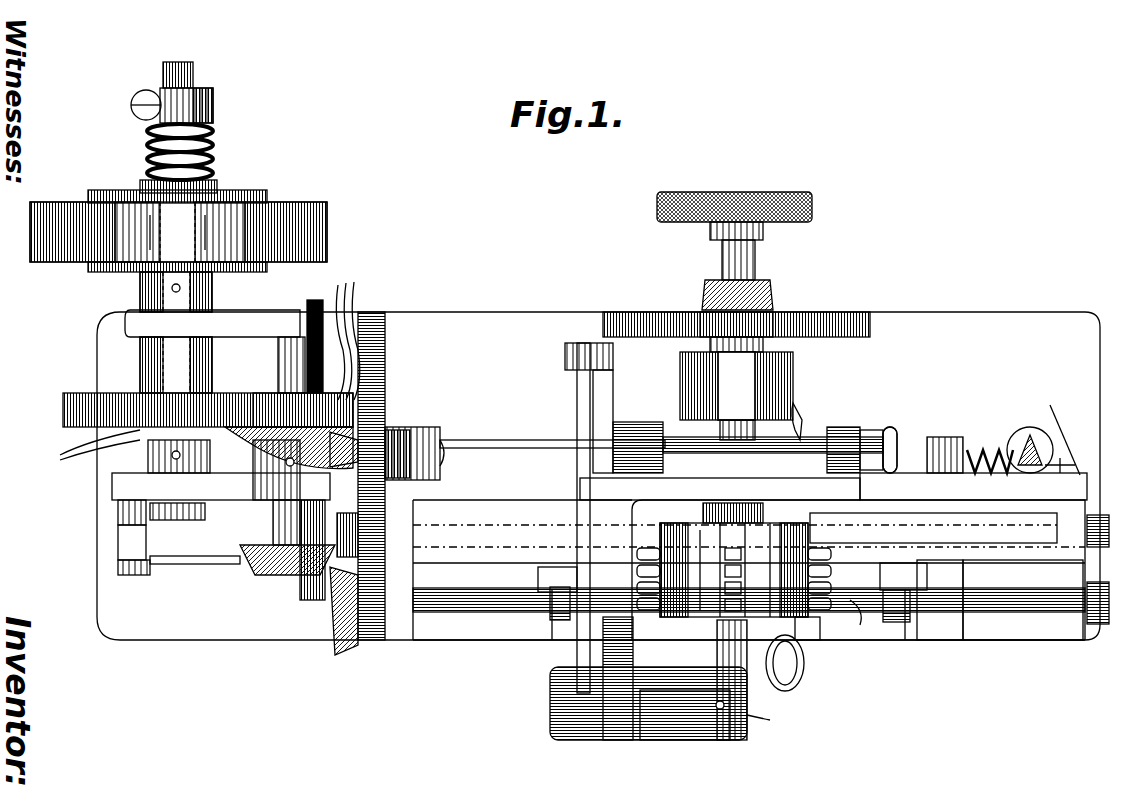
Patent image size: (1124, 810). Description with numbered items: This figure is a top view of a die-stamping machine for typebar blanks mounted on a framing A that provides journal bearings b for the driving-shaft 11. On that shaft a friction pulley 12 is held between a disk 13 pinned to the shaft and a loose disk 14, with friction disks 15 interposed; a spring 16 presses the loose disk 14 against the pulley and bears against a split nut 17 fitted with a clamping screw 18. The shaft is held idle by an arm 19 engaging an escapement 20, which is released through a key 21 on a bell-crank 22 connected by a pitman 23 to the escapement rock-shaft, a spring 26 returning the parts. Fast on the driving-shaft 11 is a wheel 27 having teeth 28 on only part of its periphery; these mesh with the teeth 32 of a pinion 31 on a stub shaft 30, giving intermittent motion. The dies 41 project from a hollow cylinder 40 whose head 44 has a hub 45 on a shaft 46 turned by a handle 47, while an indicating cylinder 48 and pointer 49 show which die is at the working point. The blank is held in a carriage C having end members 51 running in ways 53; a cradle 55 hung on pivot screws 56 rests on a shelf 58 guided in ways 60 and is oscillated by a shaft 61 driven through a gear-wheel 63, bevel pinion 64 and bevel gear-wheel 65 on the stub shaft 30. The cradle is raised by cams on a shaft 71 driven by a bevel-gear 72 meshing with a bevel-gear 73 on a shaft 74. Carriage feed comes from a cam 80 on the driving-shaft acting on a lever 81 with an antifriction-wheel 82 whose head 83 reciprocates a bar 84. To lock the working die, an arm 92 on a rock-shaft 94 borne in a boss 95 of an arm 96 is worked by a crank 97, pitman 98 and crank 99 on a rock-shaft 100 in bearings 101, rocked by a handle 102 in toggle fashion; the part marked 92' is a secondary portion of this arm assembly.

The driving-shaft 11 is at (193, 75).
The friction pulley 12 is at (327, 232).
The disk 13 is at (140, 285).
The loose disk 14 is at (217, 188).
The friction disks 15 is at (267, 197).
The spring 16 is at (213, 146).
The split nut 17 is at (213, 95).
The clamping screw 18 is at (146, 98).
The arm 19 is at (275, 481).
The escapement 20 is at (315, 514).
The key 21 is at (1022, 441).
The bell-crank 22 is at (990, 451).
The pitman 23 is at (535, 441).
The spring 26 is at (1003, 474).
The wheel 27 is at (63, 410).
The teeth 28 is at (81, 448).
The stub shaft 30 is at (273, 531).
The pinion 31 is at (275, 397).
The teeth 32 is at (358, 300).
The hollow cylinder 40 is at (793, 621).
The dies 41 is at (800, 534).
The head 44 is at (800, 526).
The hub 45 is at (703, 513).
The shaft 46 is at (758, 263).
The handle 47 is at (812, 201).
The indicating cylinder 48 is at (793, 366).
The pointer 49 is at (800, 406).
The end members 51 is at (945, 641).
The ways 53 is at (1010, 526).
The cradle 55 is at (900, 626).
The pivot screws 56 is at (915, 601).
The shelf 58 is at (807, 631).
The ways 60 is at (927, 579).
The shaft 61 is at (335, 523).
The gear-wheel 63 is at (372, 393).
The bevel pinion 64 is at (380, 427).
The bevel gear-wheel 65 is at (150, 456).
The shaft 71 is at (1030, 613).
The bevel-gear 72 is at (355, 651).
The bevel-gear 73 is at (250, 566).
The shaft 74 is at (280, 579).
The cam 80 is at (190, 512).
The lever 81 is at (118, 540).
The antifriction-wheel 82 is at (118, 512).
The antifriction head 83 is at (150, 575).
The bar 84 is at (180, 560).
The arm 92 is at (811, 694).
The arm 92' is at (698, 680).
The rock-shaft 94 is at (775, 725).
The boss 95 is at (668, 741).
The arm 96 is at (613, 648).
The crank 97 is at (550, 731).
The pitman 98 is at (577, 488).
The crank 99 is at (608, 401).
The rock-shaft 100 is at (830, 439).
The bearings 101 is at (660, 425).
The lever or handle 102 is at (897, 431).
The framing A is at (1057, 427).
The carriage C is at (897, 641).
The journal bearings b is at (260, 330).